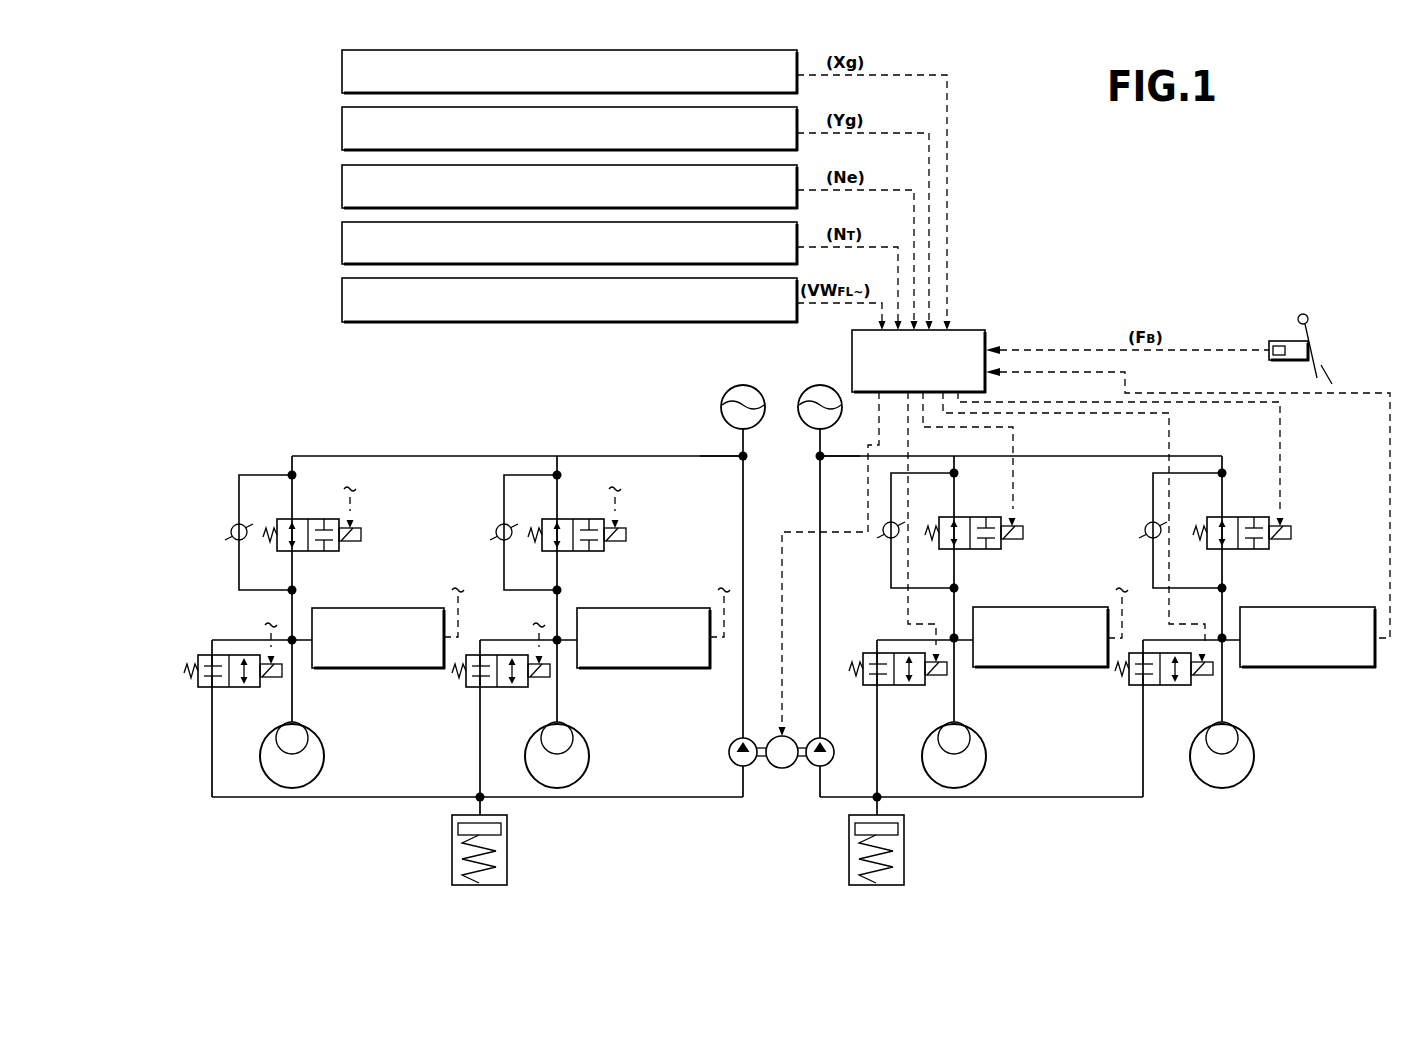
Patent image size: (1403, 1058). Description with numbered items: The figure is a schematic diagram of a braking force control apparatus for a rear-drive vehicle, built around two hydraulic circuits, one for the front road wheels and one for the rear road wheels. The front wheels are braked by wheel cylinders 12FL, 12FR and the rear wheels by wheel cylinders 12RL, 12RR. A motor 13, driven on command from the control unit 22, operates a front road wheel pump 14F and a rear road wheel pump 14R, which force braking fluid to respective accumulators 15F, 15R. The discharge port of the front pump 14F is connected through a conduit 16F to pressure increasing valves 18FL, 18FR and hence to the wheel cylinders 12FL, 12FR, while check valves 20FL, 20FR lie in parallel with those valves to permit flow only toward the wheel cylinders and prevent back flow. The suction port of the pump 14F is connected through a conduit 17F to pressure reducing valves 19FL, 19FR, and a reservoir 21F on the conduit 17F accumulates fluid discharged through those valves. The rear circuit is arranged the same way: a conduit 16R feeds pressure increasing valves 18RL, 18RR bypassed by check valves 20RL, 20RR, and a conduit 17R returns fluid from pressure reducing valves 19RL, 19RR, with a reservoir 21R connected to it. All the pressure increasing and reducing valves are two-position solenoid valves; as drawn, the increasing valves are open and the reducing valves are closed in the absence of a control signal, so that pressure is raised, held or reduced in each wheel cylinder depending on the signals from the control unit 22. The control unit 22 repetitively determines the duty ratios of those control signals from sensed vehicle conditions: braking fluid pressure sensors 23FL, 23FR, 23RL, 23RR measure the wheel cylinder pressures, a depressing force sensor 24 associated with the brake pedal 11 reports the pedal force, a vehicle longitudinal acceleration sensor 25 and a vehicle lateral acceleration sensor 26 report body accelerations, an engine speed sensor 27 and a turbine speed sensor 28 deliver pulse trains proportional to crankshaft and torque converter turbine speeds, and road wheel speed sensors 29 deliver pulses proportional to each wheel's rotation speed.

The brake pedal 11 is at (1322, 365).
The rear left wheel cylinder 12RL is at (324, 754).
The rear right wheel cylinder 12RR is at (530, 738).
The front left wheel cylinder 12FL is at (986, 754).
The front right wheel cylinder 12FR is at (1254, 762).
The motor 13 is at (780, 770).
The rear road wheel pump 14R is at (729, 752).
The front road wheel pump 14F is at (812, 768).
The rear accumulator 15R is at (720, 405).
The front accumulator 15F is at (802, 429).
The rear discharge conduit 16R is at (738, 478).
The front discharge conduit 16F is at (852, 458).
The rear suction conduit 17R is at (618, 797).
The front suction conduit 17F is at (1072, 797).
The rear left pressure increasing valve 18RL is at (323, 552).
The rear right pressure increasing valve 18RR is at (588, 552).
The front left pressure increasing valve 18FL is at (990, 550).
The front right pressure increasing valve 18FR is at (1258, 550).
The rear left pressure reducing valve 19RL is at (200, 690).
The rear right pressure reducing valve 19RR is at (501, 671).
The front left pressure reducing valve 19FL is at (862, 688).
The front right pressure reducing valve 19FR is at (1130, 688).
The rear left check valve 20RL is at (230, 542).
The rear right check valve 20RR is at (496, 542).
The front left check valve 20FL is at (882, 542).
The front right check valve 20FR is at (1142, 540).
The rear reservoir 21R is at (507, 852).
The front reservoir 21F is at (902, 852).
The control unit 22 is at (987, 332).
The rear left braking fluid pressure sensor 23RL is at (404, 670).
The rear right braking fluid pressure sensor 23RR is at (680, 670).
The front left braking fluid pressure sensor 23FL is at (1070, 669).
The front right braking fluid pressure sensor 23FR is at (1337, 669).
The brake pedal depressing force sensor 24 is at (1289, 362).
The vehicle longitudinal acceleration sensor 25 is at (342, 74).
The vehicle lateral acceleration sensor 26 is at (342, 131).
The engine speed sensor 27 is at (342, 189).
The turbine speed sensor 28 is at (342, 245).
The road wheel speed sensors 29 is at (342, 302).